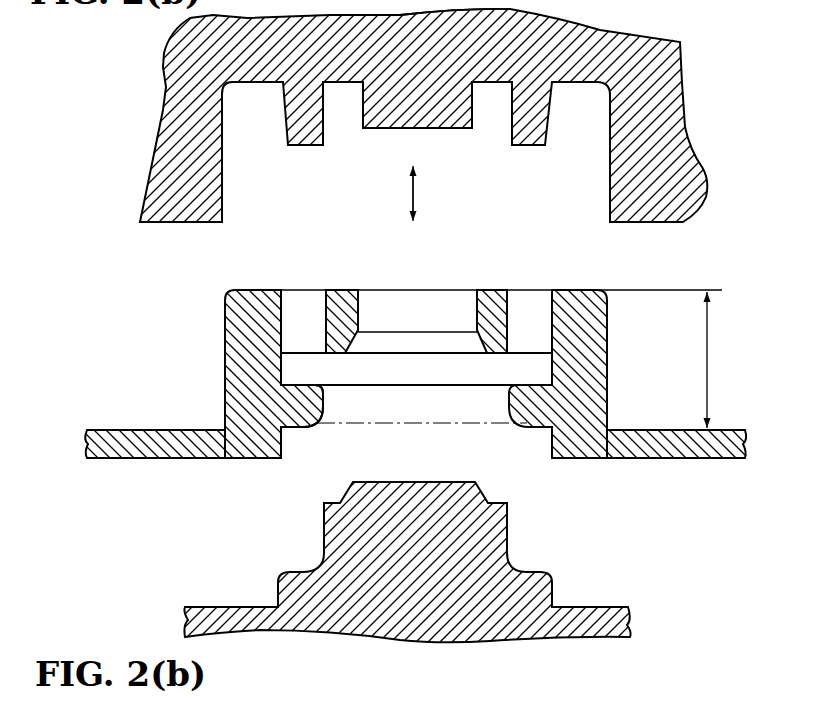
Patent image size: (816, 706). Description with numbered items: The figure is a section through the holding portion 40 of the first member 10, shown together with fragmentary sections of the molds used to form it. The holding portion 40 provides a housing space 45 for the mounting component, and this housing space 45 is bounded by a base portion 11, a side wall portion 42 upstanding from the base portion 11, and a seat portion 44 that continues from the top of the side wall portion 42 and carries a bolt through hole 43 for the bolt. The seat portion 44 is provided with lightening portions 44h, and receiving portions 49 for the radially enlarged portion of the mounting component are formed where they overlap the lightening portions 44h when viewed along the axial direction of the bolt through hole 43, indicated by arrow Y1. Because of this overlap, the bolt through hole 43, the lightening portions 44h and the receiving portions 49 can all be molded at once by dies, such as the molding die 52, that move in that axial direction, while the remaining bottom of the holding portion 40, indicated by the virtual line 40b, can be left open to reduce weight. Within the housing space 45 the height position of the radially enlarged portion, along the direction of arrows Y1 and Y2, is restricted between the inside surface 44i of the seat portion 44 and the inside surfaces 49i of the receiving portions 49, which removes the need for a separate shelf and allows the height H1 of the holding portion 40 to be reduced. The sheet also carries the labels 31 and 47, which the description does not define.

The first member 10 is at (708, 262).
The base portion 11 is at (736, 430).
The upper member 31 is at (436, 111).
The top surface of upper member 47 is at (420, 7).
The holding portion 40 is at (437, 344).
The virtual line (bottom of the holding portion) 40b is at (398, 428).
The side wall portion 42 is at (225, 315).
The bolt through hole 43 is at (375, 305).
The seat portion 44 is at (258, 288).
The lightening portions 44h is at (532, 308).
The inside surface of the seat portion 44i is at (294, 356).
The housing space 45 is at (435, 371).
The receiving portions 49 is at (298, 405).
The inside surfaces of the receiving portions 49i is at (296, 380).
The molding die 52 is at (548, 541).
The height of the holding portion H1 is at (721, 360).
The arrow Y1 (axial direction) Y1 is at (413, 208).
The arrow Y2 (height direction) Y2 is at (413, 177).